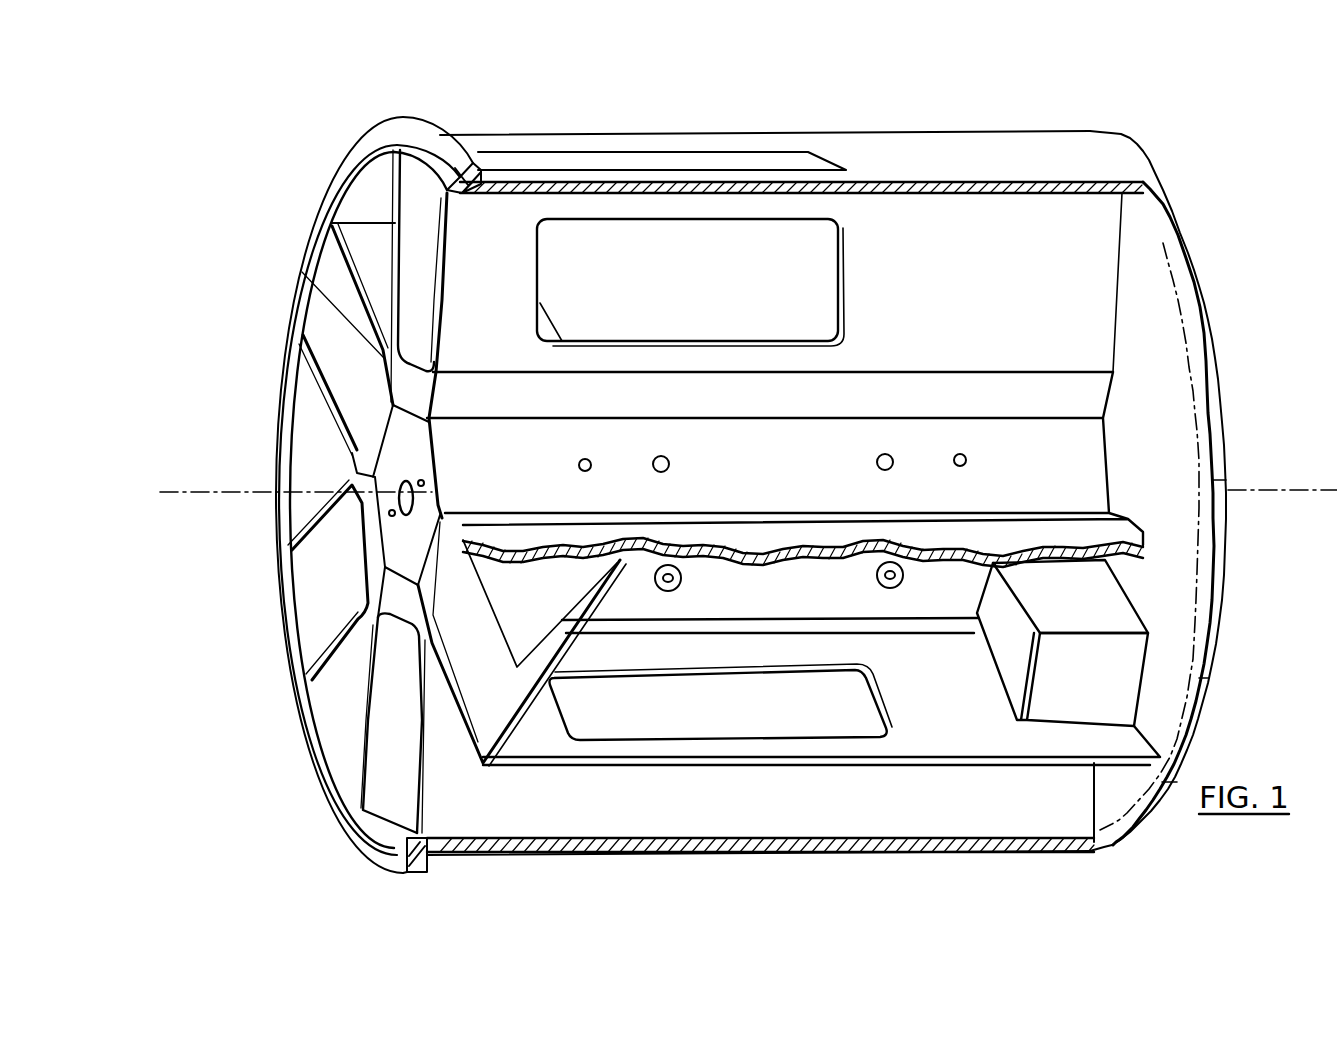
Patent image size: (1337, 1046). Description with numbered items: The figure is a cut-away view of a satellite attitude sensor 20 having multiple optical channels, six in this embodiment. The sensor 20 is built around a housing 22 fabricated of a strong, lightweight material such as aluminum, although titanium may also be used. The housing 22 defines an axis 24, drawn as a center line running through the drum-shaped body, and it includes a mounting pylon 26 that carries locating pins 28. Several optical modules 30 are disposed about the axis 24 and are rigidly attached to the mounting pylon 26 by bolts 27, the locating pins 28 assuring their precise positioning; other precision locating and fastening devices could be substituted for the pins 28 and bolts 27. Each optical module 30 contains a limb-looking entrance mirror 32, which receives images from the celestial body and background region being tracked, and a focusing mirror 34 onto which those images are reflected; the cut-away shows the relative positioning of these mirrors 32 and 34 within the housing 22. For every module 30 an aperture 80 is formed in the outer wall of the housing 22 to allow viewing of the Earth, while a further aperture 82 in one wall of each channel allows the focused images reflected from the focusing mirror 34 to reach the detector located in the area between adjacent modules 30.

The satellite attitude sensor 20 is at (999, 116).
The housing 22 is at (368, 152).
The axis 24 is at (236, 490).
The mounting pylon 26 is at (398, 445).
The bolts 27 is at (682, 580).
The locating pins 28 is at (583, 465).
The optical modules 30 is at (330, 275).
The limb-looking entrance mirror 32 is at (507, 718).
The focusing mirror 34 is at (1000, 650).
The aperture 80 is at (618, 160).
The aperture 82 is at (815, 244).